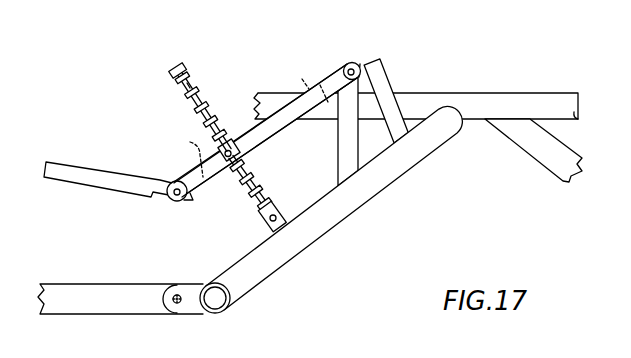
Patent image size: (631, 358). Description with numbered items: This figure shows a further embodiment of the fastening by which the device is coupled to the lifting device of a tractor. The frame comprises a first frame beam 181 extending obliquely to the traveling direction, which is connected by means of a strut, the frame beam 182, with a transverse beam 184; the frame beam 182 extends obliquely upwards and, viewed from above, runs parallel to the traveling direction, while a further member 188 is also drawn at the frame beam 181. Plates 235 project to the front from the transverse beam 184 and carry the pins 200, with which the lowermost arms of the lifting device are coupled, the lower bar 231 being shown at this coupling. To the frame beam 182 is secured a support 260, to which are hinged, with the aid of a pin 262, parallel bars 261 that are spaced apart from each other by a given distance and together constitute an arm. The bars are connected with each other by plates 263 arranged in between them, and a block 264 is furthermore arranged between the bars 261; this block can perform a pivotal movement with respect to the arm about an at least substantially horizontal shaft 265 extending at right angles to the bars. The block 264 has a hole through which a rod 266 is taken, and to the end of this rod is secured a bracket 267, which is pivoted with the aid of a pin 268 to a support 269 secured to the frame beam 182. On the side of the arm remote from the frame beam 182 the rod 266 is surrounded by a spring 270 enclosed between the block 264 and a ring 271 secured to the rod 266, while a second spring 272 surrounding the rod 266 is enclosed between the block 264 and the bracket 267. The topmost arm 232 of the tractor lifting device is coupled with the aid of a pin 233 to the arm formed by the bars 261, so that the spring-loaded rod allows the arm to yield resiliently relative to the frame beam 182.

The first frame beam 181 is at (531, 101).
The frame beam 182 is at (337, 206).
The transverse beam 184 is at (229, 309).
The brace 188 is at (540, 147).
The pins 200 is at (177, 291).
The support bar 231 is at (57, 290).
The topmost arm 232 is at (70, 166).
The pin 233 is at (177, 204).
The plates 235 is at (190, 305).
The support 260 is at (390, 130).
The parallel bars 261 is at (339, 70).
The pin 262 is at (361, 60).
The plates 263 is at (192, 143).
The block 264 is at (242, 155).
The shaft 265 is at (230, 140).
The rod 266 is at (200, 95).
The bracket 267 is at (258, 218).
The pin 268 is at (276, 206).
The support 269 is at (266, 234).
The spring 270 is at (178, 88).
The ring 271 is at (179, 65).
The spring 272 is at (250, 194).